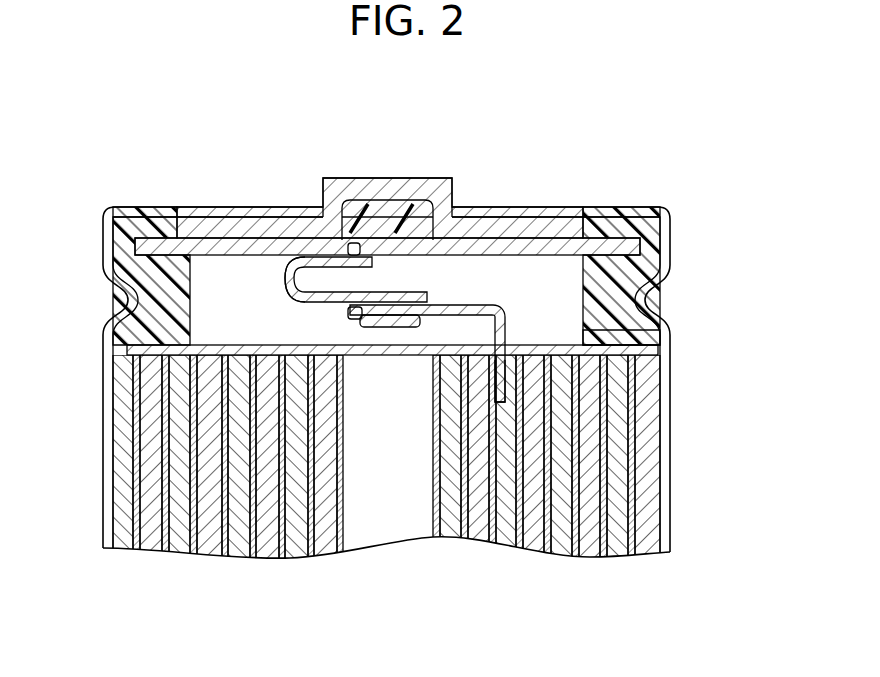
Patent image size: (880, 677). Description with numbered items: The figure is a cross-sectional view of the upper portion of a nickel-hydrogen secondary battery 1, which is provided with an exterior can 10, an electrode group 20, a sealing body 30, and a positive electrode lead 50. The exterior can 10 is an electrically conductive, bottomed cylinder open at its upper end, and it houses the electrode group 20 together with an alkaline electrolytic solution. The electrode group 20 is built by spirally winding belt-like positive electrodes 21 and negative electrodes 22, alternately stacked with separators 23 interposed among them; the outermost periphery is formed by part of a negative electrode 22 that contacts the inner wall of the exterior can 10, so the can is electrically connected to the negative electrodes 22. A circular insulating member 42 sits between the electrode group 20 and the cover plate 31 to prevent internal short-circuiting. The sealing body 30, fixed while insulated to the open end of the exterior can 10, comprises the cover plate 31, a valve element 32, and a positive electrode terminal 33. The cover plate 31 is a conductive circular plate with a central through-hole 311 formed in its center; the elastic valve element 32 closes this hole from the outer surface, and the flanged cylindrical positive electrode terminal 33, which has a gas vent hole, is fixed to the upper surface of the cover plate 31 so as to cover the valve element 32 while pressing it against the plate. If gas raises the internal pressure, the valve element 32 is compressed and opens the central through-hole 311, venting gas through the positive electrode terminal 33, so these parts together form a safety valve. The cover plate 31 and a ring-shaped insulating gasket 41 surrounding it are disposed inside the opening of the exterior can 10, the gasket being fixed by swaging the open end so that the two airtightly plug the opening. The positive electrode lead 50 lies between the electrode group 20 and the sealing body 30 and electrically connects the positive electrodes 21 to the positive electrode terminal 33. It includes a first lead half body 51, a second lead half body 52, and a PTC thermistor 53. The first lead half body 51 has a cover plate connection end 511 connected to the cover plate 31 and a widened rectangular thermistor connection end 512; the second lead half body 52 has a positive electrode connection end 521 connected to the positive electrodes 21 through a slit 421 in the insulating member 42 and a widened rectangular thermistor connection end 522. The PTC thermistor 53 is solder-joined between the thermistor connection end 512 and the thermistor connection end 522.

The nickel-hydrogen secondary battery 1 is at (687, 175).
The exterior can 10 is at (672, 364).
The electrode group 20 is at (236, 560).
The positive electrode 21 is at (560, 512).
The negative electrode 22 is at (560, 480).
The separator 23 is at (615, 445).
The sealing body 30 is at (502, 215).
The cover plate 31 is at (211, 243).
The central through-hole 311 is at (410, 238).
The valve element 32 is at (389, 200).
The positive electrode terminal 33 is at (440, 205).
The insulating gasket 41 is at (135, 270).
The insulating member 42 is at (671, 344).
The slit 421 is at (516, 343).
The positive electrode lead 50 is at (322, 316).
The first lead half body 51 is at (290, 292).
The cover plate connection end 511 is at (289, 267).
The thermistor connection end 512 is at (367, 238).
The second lead half body 52 is at (509, 330).
The positive electrode connection end 521 is at (600, 408).
The thermistor connection end 522 is at (397, 330).
The PTC thermistor 53 is at (378, 314).